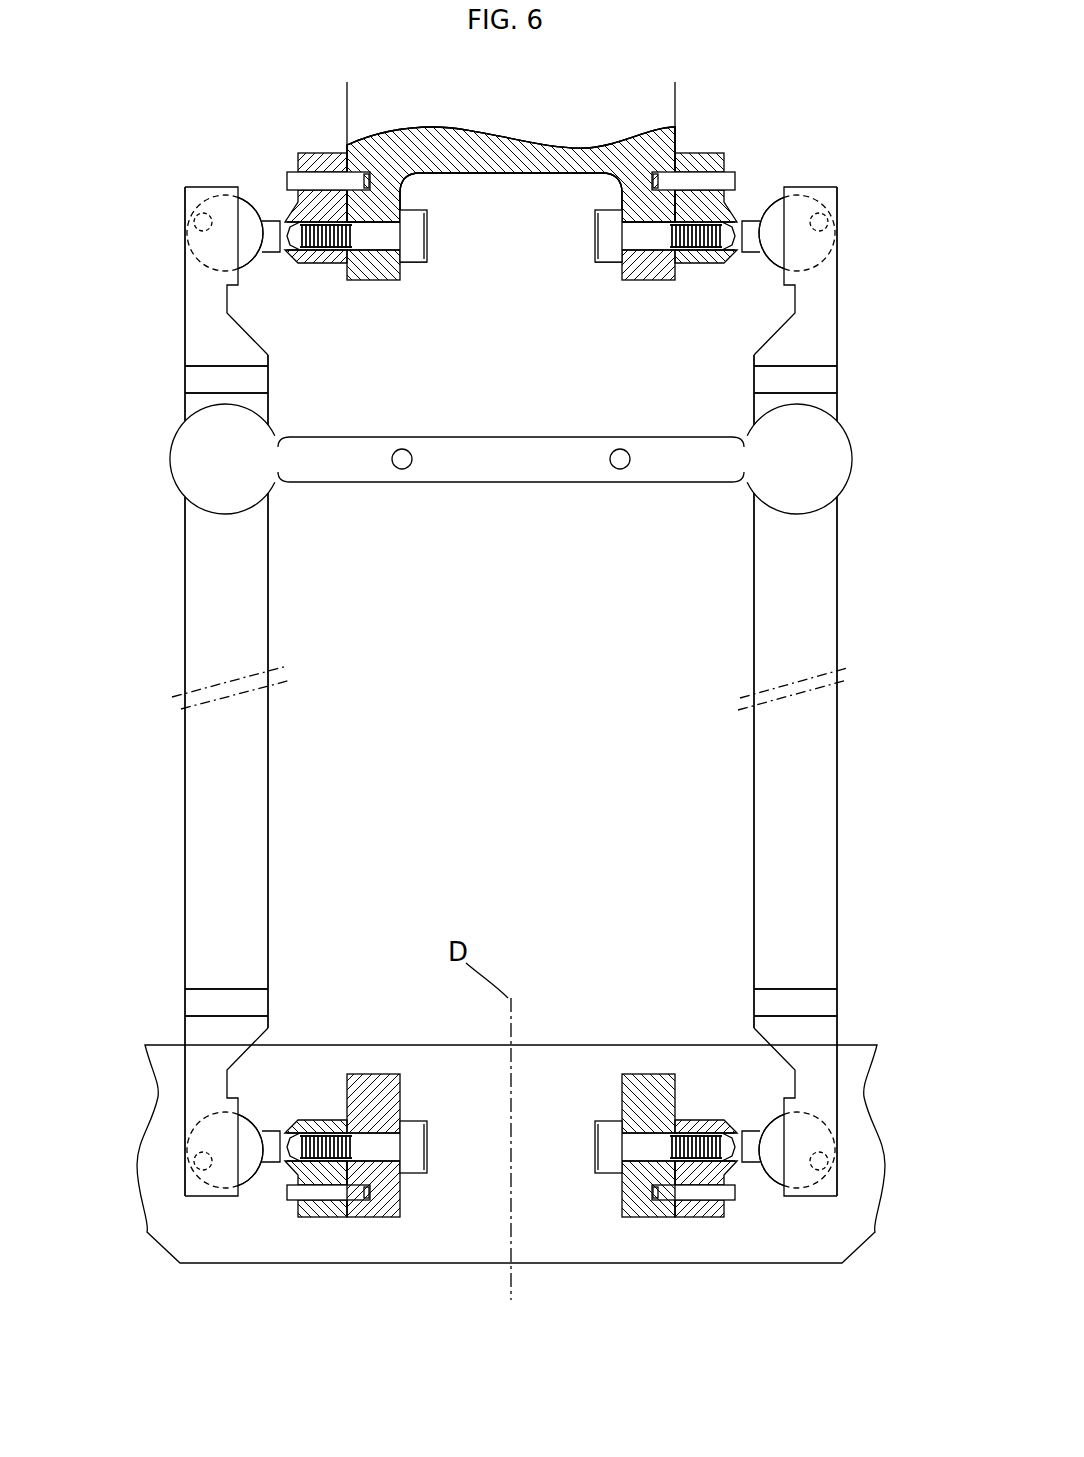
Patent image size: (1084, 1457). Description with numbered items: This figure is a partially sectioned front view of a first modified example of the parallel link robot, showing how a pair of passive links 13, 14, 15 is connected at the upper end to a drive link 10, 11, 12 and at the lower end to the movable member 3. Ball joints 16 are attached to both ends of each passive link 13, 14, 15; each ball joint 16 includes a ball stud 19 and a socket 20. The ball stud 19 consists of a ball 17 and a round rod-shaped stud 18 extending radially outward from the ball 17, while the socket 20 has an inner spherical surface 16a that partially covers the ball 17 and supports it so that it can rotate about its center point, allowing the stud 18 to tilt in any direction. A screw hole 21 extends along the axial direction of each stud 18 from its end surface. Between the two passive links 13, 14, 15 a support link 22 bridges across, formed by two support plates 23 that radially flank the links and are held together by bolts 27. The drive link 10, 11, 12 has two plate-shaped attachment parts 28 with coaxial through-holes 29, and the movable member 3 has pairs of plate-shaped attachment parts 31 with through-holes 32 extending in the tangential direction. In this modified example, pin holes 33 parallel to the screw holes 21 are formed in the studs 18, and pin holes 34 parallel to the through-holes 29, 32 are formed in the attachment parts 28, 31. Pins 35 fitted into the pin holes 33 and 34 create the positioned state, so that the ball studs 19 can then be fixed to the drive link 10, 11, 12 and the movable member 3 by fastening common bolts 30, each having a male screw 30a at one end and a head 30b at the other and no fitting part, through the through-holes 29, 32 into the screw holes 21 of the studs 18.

The movable member 3 is at (473, 1275).
The drive link 10 is at (338, 88).
The drive link 11 is at (511, 174).
The drive link 12 is at (511, 174).
The passive link 13 is at (905, 578).
The passive link 14 is at (226, 691).
The passive link 15 is at (795, 691).
The ball joint 16 is at (282, 283).
The inner spherical surface 16a is at (198, 215).
The ball 17 is at (248, 262).
The stud 18 is at (292, 205).
The ball stud 19 is at (262, 206).
The socket 20 is at (185, 246).
The screw hole 21 is at (345, 252).
The support link 22 is at (345, 492).
The support plate 23 is at (512, 484).
The bolt 27 is at (401, 470).
The attachment part 28 is at (405, 280).
The through-hole 29 is at (380, 270).
The bolt member 30 is at (435, 272).
The male screw 30a is at (357, 262).
The head 30b is at (415, 210).
The attachment part 31 is at (400, 1218).
The through-hole 32 is at (385, 1110).
The pin hole 33 is at (313, 172).
The pin hole 34 is at (353, 173).
The pin 35 is at (352, 150).